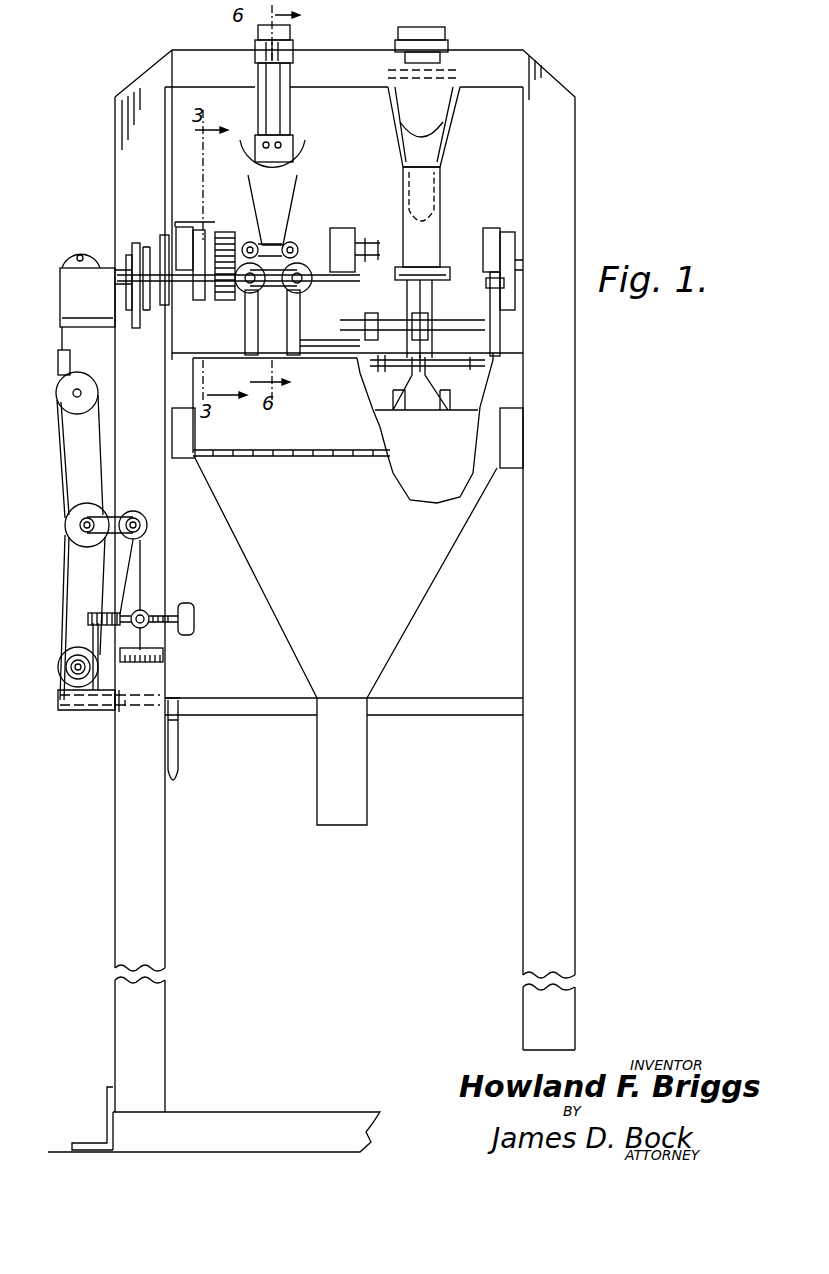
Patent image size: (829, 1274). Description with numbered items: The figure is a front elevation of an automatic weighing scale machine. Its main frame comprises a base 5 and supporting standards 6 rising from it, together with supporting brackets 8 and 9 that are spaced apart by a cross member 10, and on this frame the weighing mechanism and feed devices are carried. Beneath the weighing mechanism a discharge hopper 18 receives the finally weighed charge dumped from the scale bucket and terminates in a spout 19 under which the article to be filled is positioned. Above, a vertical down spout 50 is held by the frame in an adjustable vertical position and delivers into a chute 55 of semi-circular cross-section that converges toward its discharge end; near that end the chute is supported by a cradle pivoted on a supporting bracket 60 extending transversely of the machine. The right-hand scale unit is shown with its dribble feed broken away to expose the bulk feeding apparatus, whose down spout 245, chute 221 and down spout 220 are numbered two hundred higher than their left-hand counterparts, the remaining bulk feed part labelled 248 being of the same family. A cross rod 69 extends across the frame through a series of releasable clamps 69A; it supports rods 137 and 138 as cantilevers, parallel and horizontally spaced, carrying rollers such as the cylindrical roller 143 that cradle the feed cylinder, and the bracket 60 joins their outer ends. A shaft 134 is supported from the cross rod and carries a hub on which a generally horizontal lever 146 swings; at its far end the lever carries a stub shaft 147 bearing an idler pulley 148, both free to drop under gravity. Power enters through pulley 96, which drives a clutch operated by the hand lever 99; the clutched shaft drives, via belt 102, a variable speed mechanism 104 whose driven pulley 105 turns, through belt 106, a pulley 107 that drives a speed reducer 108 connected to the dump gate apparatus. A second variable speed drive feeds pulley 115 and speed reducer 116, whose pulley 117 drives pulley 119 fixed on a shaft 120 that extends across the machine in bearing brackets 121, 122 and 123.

The base 5 is at (264, 1112).
The supporting standards 6 is at (164, 910).
The supporting bracket 8 is at (140, 84).
The supporting bracket 9 is at (564, 90).
The cross member 10 is at (342, 48).
The discharge hopper 18 is at (420, 578).
The spout 19 is at (368, 758).
The down spout 50 is at (258, 38).
The chute 55 is at (298, 178).
The supporting bracket 60 is at (289, 189).
The cross rod 69 is at (164, 234).
The releasable clamps 69A is at (183, 227).
The pulley 96 is at (50, 668).
The hand lever 99 is at (172, 740).
The belt 102 is at (60, 588).
The variable speed mechanism 104 is at (148, 559).
The pulley 105 is at (64, 526).
The belt 106 is at (62, 478).
The pulley 107 is at (58, 394).
The speed reducer 108 is at (64, 360).
The pulley 115 is at (70, 262).
The speed reducer 116 is at (70, 302).
The pulley 117 is at (128, 315).
The pulley 119 is at (126, 247).
The shaft 120 is at (486, 286).
The bearing bracket 121 is at (137, 242).
The bearing bracket 122 is at (356, 308).
The bearing bracket 123 is at (516, 264).
The shaft 134 is at (248, 304).
The rod 137 is at (218, 233).
The rod 138 is at (296, 244).
The cylindrical roller 143 is at (343, 230).
The lever 146 is at (270, 294).
The stub shaft 147 is at (312, 282).
The idler pulley 148 is at (304, 336).
The down spout 220 is at (442, 206).
The chute 221 is at (438, 150).
The down spout 245 is at (440, 118).
The bowl 248 is at (405, 143).